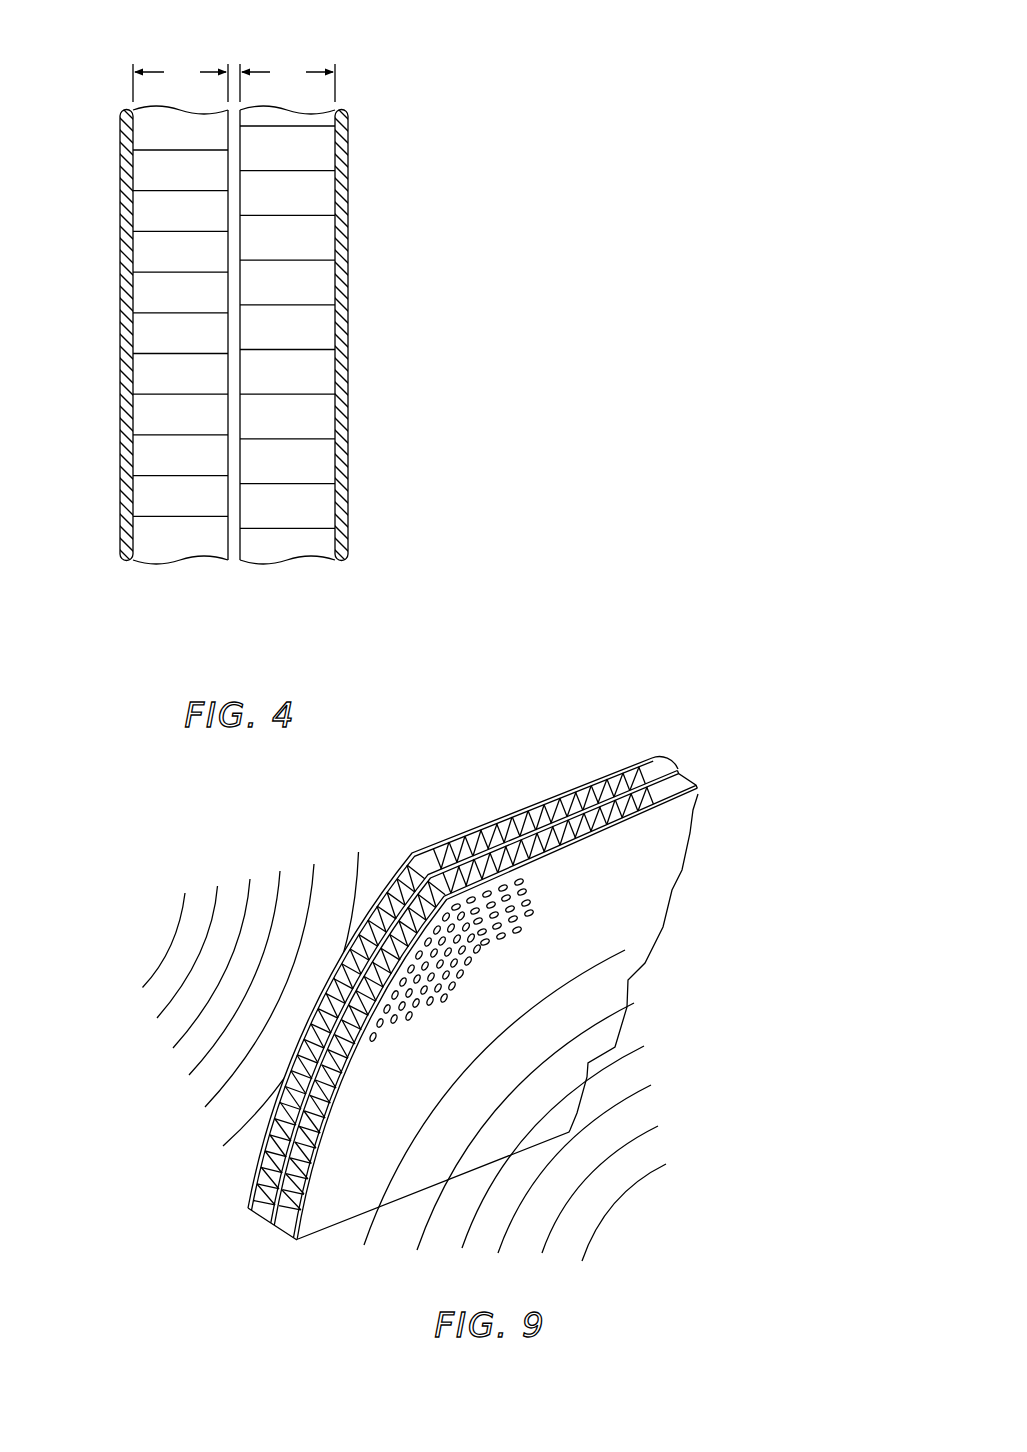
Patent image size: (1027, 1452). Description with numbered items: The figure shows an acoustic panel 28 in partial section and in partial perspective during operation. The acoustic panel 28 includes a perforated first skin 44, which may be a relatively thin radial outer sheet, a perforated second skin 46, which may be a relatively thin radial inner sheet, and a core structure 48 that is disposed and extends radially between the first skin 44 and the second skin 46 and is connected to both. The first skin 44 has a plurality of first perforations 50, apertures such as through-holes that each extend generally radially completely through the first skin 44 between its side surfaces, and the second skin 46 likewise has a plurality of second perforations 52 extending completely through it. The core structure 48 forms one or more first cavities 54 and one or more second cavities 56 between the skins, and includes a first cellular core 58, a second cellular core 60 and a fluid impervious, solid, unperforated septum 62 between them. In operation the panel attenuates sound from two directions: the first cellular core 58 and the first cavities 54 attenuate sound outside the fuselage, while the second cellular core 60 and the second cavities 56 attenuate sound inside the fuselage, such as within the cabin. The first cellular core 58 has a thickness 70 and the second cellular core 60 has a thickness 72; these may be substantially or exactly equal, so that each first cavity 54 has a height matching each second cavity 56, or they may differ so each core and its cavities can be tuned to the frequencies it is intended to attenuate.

In FIG. 4, the acoustic panel 28 is at (384, 80).
In FIG. 9, the acoustic panel 28 is at (711, 678).
In FIG. 4, the first skin 44 is at (112, 152).
In FIG. 9, the first skin 44 is at (648, 757).
In FIG. 4, the second skin 46 is at (358, 152).
In FIG. 9, the second skin 46 is at (702, 791).
In FIG. 4, the core structure 48 is at (133, 622).
In FIG. 9, the core structure 48 is at (237, 1214).
In FIG. 4, the first perforations 50 is at (118, 392).
In FIG. 4, the second perforations 52 is at (342, 325).
In FIG. 9, the second perforations 52 is at (500, 918).
In FIG. 4, the first cavities 54 is at (140, 260).
In FIG. 9, the first cavities 54 is at (517, 818).
In FIG. 4, the second cavities 56 is at (325, 237).
In FIG. 9, the second cavities 56 is at (613, 825).
In FIG. 4, the first cellular core 58 is at (228, 576).
In FIG. 9, the first cellular core 58 is at (672, 754).
In FIG. 4, the second cellular core 60 is at (335, 576).
In FIG. 9, the second cellular core 60 is at (704, 780).
In FIG. 4, the septum 62 is at (240, 411).
In FIG. 9, the septum 62 is at (680, 772).
In FIG. 4, the thickness of the first cellular core 70 is at (180, 81).
In FIG. 4, the thickness of the second cellular core 72 is at (287, 81).